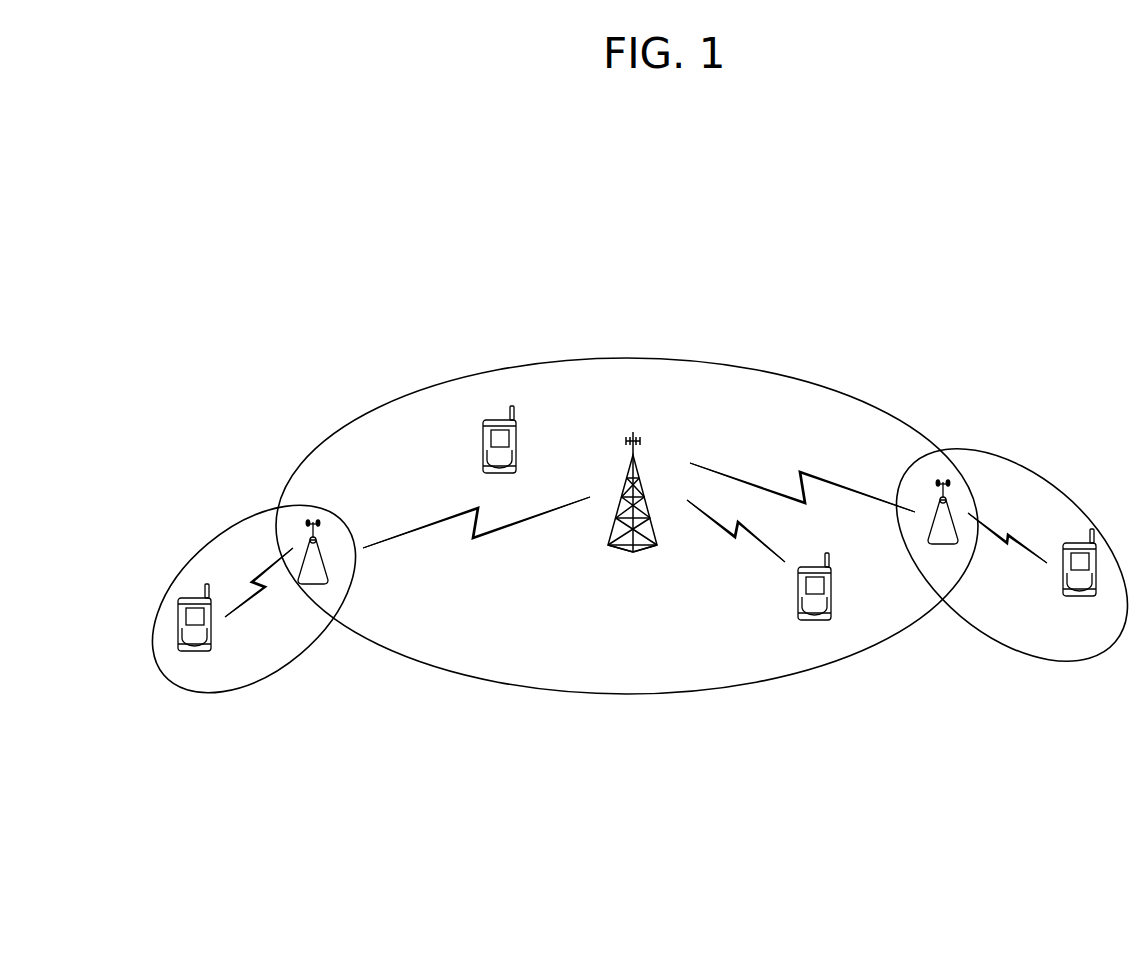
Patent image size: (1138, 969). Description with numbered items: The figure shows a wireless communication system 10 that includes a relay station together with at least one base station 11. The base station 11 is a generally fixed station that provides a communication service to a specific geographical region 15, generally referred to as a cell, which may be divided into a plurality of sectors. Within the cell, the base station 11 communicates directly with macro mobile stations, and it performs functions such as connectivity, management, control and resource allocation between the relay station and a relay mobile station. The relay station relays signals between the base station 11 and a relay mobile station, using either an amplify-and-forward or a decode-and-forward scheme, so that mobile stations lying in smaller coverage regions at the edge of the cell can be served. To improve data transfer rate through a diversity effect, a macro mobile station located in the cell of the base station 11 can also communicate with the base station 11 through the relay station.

The wireless communication system 10 is at (792, 343).
The base station 11 is at (641, 464).
The geographical region 15 is at (605, 358).